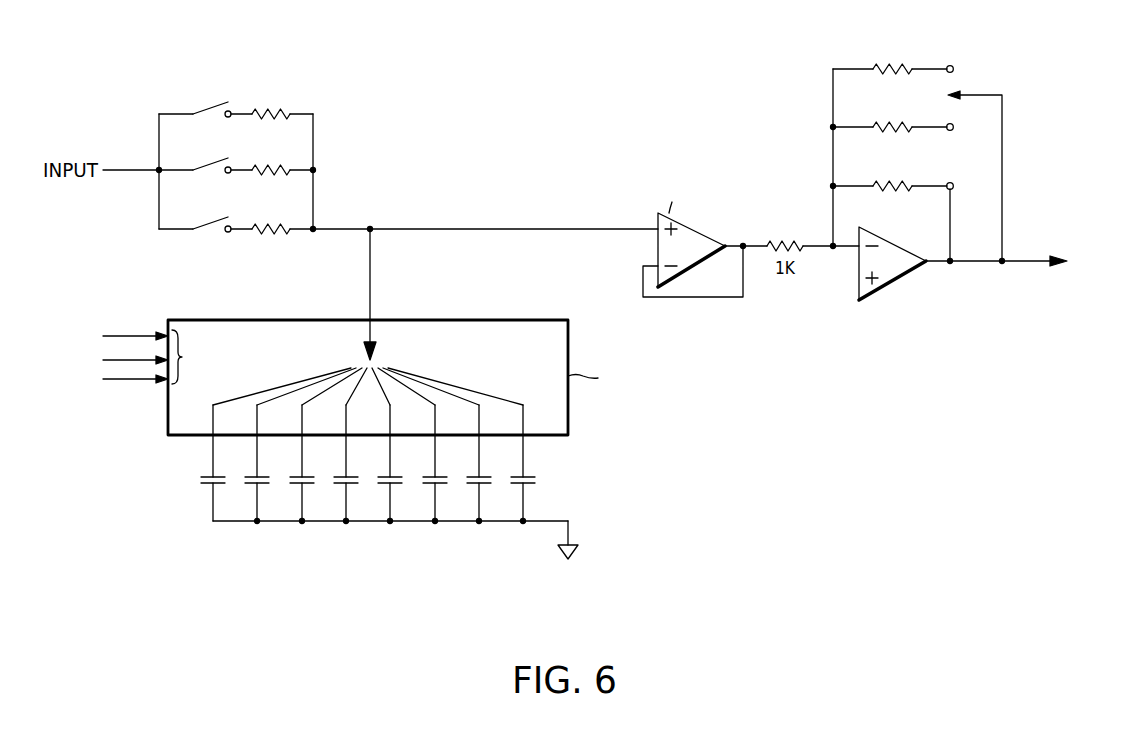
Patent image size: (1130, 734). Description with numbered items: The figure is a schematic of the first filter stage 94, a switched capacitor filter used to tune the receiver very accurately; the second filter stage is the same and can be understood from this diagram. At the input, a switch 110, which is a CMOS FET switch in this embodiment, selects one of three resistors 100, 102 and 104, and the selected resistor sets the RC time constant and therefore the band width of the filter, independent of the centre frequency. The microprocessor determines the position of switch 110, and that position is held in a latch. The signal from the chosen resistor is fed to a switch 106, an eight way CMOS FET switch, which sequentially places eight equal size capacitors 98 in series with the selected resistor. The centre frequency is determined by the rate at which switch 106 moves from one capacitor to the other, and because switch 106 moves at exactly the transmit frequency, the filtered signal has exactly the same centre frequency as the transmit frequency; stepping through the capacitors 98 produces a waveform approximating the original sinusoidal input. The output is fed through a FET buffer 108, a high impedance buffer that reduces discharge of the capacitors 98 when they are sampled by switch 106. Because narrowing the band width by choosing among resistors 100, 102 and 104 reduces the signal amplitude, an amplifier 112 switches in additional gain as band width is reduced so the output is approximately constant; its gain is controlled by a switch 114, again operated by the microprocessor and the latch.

The first filter stage 94 is at (355, 500).
The capacitors 98 is at (263, 484).
The resistor 100 is at (253, 112).
The resistor 102 is at (252, 168).
The resistor 104 is at (263, 233).
The switch 106 is at (412, 319).
The FET buffer 108 is at (694, 224).
The switch 110 is at (158, 173).
The amplifier 112 is at (892, 283).
The switch 114 is at (972, 69).